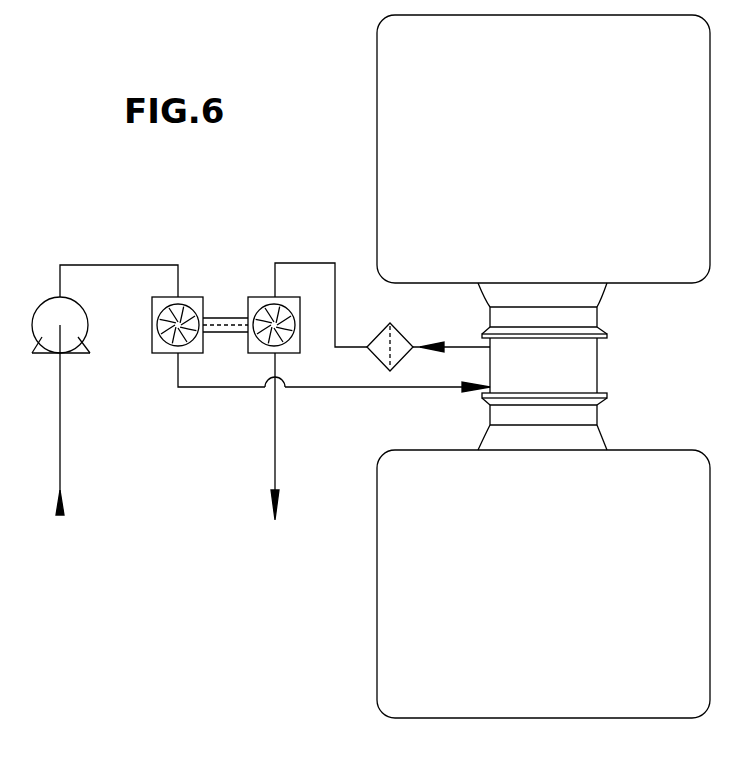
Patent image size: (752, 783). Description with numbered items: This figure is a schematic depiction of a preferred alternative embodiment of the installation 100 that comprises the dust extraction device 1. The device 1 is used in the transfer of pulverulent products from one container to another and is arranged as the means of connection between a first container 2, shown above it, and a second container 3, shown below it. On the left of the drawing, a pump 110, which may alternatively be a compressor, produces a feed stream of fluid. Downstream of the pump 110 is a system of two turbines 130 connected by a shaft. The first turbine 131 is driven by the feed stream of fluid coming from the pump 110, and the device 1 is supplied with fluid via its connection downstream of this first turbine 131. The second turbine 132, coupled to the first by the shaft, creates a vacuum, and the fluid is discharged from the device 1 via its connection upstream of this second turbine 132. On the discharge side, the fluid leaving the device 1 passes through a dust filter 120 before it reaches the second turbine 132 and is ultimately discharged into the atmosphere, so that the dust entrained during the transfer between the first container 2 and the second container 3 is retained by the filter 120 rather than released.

The installation 100 is at (306, 226).
The pump 110 is at (40, 292).
The dust filter 120 is at (380, 334).
The system of two turbines 130 is at (210, 292).
The first turbine 131 is at (160, 355).
The second turbine 132 is at (297, 352).
The dust extraction device 1 is at (556, 375).
The first container 2 is at (553, 155).
The second container 3 is at (556, 586).